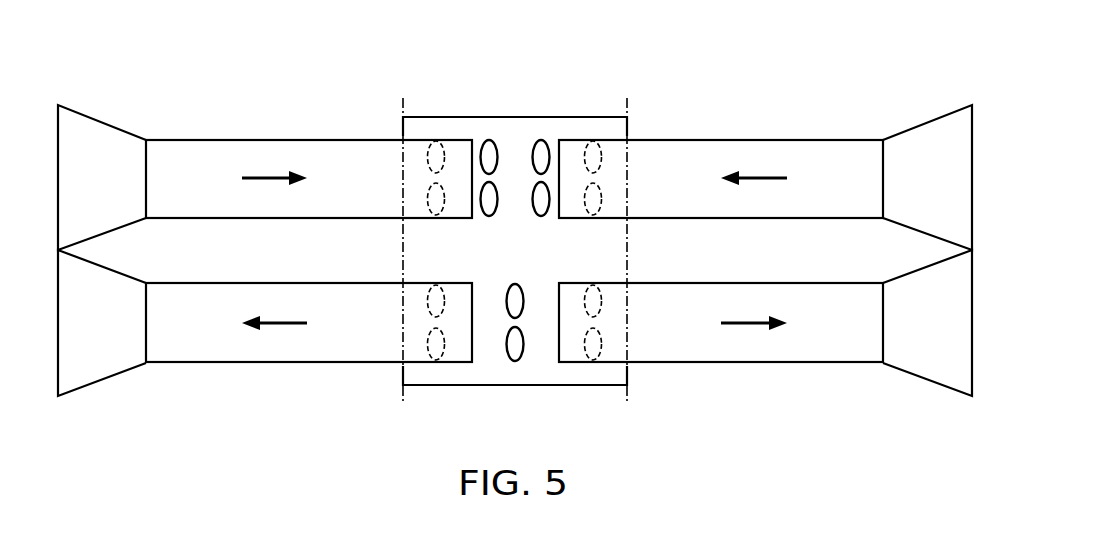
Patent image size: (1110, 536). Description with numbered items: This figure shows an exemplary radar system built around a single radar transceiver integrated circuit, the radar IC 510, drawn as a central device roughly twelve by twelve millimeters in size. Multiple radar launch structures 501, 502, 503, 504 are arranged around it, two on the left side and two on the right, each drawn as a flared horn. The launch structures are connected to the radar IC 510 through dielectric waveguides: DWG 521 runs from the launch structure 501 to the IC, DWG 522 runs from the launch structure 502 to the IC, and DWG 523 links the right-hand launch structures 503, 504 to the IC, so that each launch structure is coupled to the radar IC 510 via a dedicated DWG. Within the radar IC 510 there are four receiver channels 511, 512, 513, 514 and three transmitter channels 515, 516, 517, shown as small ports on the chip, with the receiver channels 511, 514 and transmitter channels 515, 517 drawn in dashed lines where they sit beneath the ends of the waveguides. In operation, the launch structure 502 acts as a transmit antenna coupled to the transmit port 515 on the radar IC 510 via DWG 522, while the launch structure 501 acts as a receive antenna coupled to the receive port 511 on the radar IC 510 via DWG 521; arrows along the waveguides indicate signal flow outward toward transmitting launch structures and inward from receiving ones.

The launch structure 501 is at (100, 133).
The launch structure 502 is at (100, 368).
The launch structure 503 is at (928, 133).
The launch structure 504 is at (928, 368).
The radar IC 510 is at (410, 255).
The receiver channel 511 is at (433, 152).
The receiver channel 512 is at (489, 215).
The receiver channel 513 is at (541, 215).
The receiver channel 514 is at (596, 152).
The transmitter channel 515 is at (430, 357).
The transmitter channel 516 is at (515, 283).
The transmitter channel 517 is at (600, 357).
The DWG 521 is at (274, 138).
The DWG 522 is at (274, 363).
The DWG 523 is at (768, 385).